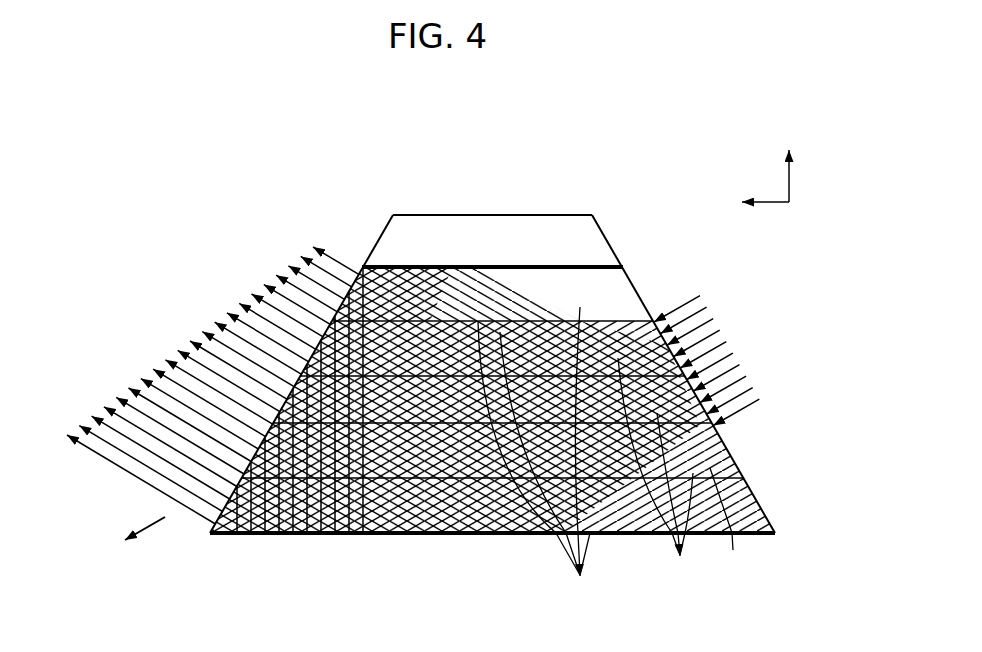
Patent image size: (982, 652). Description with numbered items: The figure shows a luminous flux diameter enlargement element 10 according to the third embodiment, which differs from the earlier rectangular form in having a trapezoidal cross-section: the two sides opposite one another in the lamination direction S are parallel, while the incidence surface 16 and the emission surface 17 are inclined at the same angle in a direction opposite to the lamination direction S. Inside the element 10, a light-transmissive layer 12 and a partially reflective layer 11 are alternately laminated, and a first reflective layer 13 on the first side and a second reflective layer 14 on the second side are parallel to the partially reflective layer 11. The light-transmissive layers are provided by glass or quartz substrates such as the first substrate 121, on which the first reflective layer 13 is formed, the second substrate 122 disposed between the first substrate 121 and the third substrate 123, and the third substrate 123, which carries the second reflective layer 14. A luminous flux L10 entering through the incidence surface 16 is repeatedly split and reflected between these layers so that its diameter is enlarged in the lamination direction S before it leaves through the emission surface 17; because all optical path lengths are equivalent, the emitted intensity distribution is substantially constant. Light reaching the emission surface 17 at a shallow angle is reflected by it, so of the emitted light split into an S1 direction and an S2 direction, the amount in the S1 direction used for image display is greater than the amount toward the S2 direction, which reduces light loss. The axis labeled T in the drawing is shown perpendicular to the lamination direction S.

The luminous flux diameter enlargement element 10 is at (570, 191).
The partially reflective layer 11 is at (455, 437).
The light-transmissive layer 12 is at (492, 427).
The first substrate 121 is at (627, 520).
The second substrate 122 is at (733, 523).
The third substrate 123 is at (588, 237).
The first reflective layer 13 is at (428, 263).
The second reflective layer 14 is at (471, 536).
The incidence surface 16 is at (756, 500).
The emission surface 17 is at (348, 292).
The S1 direction S1 is at (212, 385).
The S2 direction S2 is at (145, 540).
The luminous flux L10 is at (716, 361).
The lamination direction S is at (787, 164).
The T axis direction T is at (755, 206).